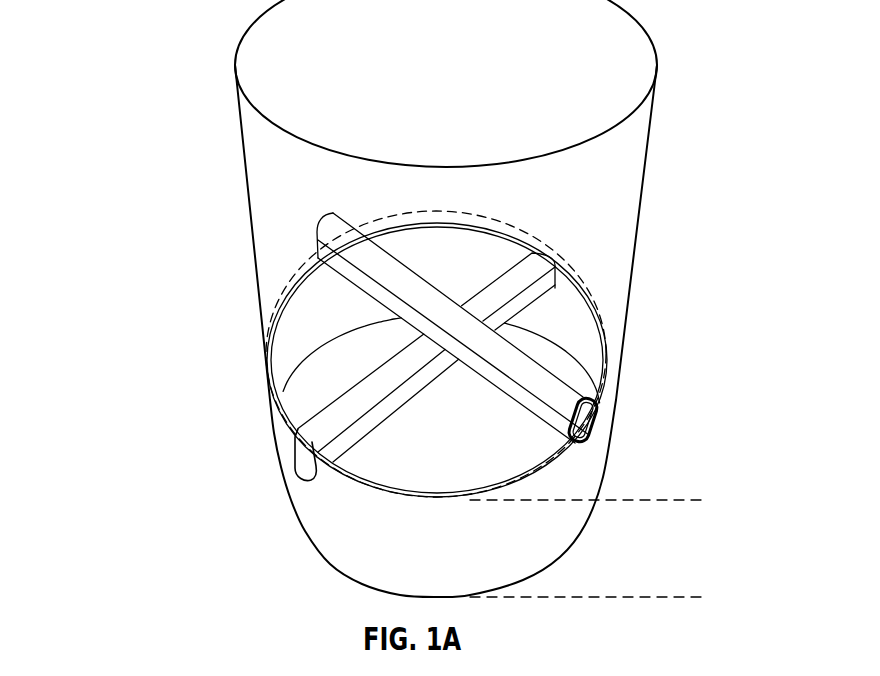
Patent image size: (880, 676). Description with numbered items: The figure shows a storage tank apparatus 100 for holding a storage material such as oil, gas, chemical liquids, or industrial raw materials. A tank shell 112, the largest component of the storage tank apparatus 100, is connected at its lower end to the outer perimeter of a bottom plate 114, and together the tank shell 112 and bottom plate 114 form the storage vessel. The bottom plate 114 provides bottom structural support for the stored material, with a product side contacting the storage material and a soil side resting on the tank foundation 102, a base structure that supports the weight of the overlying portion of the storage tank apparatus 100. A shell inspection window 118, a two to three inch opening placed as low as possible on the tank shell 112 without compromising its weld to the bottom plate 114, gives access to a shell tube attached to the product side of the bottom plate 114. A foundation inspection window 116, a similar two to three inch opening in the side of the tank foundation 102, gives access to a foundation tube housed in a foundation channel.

The storage tank apparatus 100 is at (118, 598).
The tank foundation 102 is at (703, 500).
The tank shell 112 is at (732, 82).
The bottom plate 114 is at (500, 227).
The foundation inspection window 116 is at (308, 482).
The shell inspection window 118 is at (588, 443).